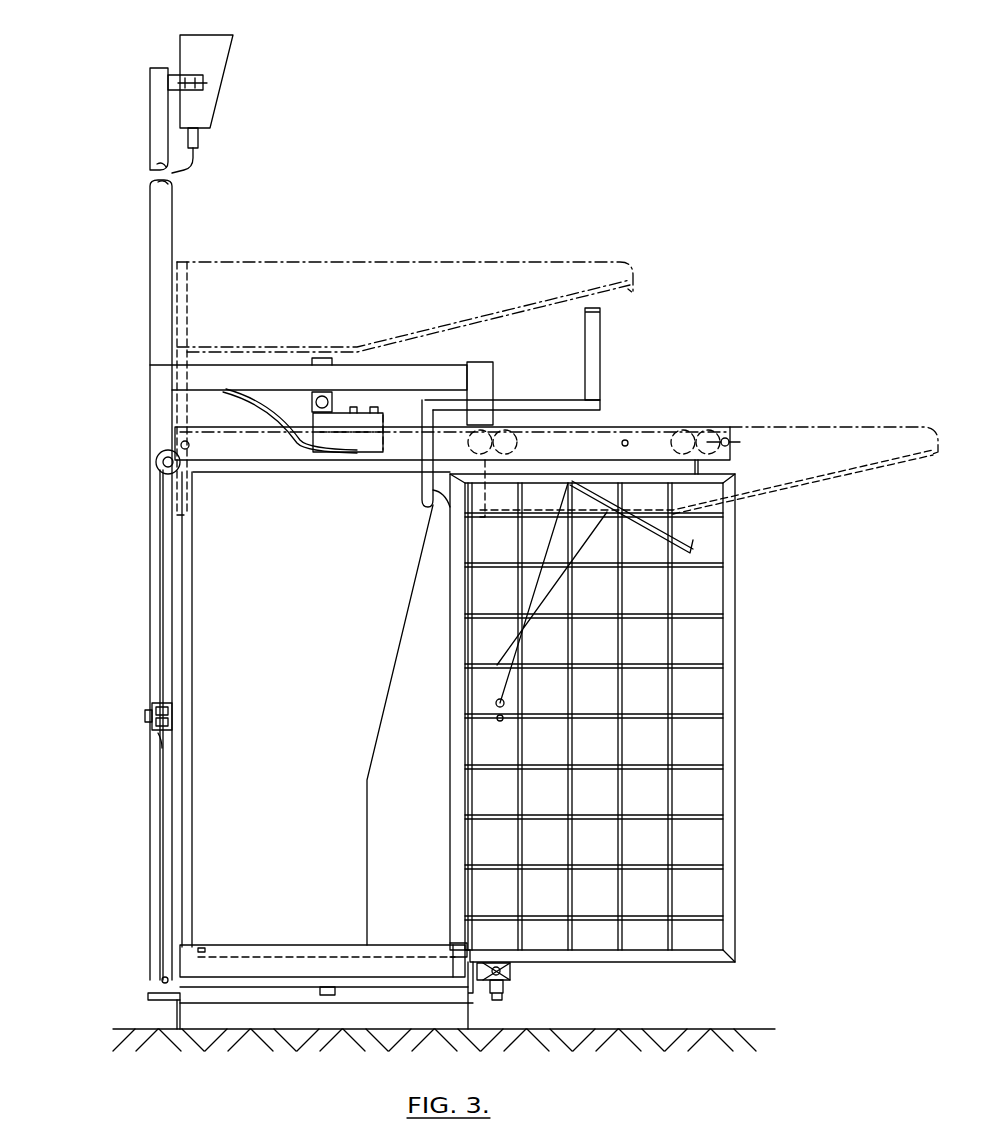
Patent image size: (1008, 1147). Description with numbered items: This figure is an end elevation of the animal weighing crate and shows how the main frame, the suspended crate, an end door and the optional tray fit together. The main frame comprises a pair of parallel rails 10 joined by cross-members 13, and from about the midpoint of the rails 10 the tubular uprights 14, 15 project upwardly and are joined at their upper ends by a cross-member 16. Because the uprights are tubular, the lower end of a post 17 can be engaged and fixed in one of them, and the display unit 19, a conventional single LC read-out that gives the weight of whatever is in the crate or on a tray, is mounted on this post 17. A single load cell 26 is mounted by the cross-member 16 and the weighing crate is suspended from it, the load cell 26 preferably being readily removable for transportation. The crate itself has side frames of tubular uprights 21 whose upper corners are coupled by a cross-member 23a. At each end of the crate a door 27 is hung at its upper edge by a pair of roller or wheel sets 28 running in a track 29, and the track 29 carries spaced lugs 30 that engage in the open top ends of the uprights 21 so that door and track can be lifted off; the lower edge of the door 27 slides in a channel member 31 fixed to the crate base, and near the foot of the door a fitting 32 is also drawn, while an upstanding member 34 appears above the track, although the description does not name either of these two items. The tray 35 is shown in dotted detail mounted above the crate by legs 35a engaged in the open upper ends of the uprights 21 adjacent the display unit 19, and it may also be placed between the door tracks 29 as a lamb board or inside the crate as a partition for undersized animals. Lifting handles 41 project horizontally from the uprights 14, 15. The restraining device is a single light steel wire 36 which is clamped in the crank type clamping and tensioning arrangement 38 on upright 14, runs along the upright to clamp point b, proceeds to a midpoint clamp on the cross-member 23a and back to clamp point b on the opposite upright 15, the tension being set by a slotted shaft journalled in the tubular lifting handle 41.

The rails 10 is at (178, 1016).
The cross-members 13 is at (300, 1029).
The upright 14 is at (157, 433).
The upright 15 is at (483, 375).
The cross-member 16 is at (375, 365).
The post 17 is at (172, 216).
The display unit 19 is at (210, 100).
The tubular uprights 21 is at (187, 695).
The cross-member 23a is at (352, 470).
The load cell 26 is at (395, 390).
The door 27 is at (465, 683).
The roller or wheel sets 28 is at (497, 430).
The track 29 is at (287, 452).
The lugs 30 is at (160, 474).
The channel member 31 is at (302, 957).
The latch 32 is at (505, 985).
The pipe 34 is at (595, 368).
The tray 35 is at (345, 278).
The legs 35a is at (172, 362).
The wire 36 is at (161, 860).
The clamping/tensioning arrangement 38 is at (140, 723).
The lifting handles 41 is at (158, 733).
The clamp point b is at (146, 989).